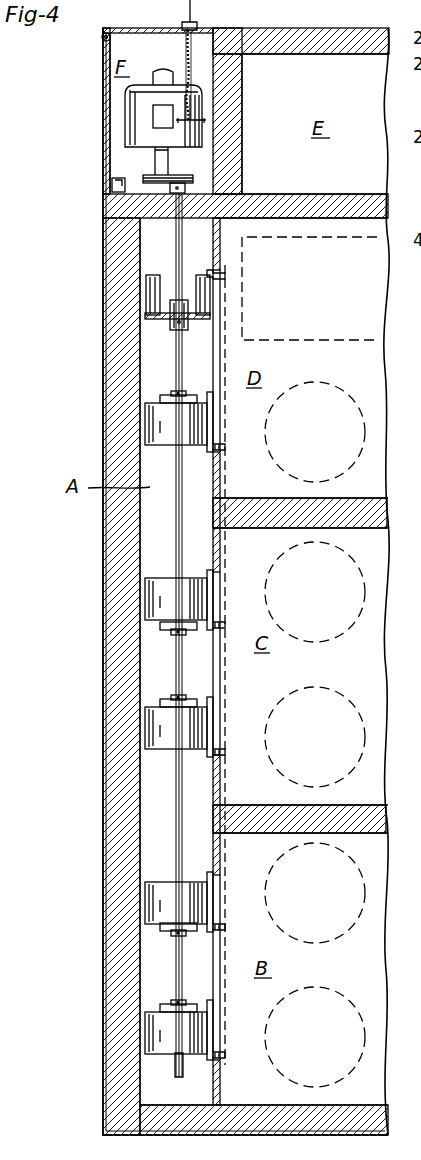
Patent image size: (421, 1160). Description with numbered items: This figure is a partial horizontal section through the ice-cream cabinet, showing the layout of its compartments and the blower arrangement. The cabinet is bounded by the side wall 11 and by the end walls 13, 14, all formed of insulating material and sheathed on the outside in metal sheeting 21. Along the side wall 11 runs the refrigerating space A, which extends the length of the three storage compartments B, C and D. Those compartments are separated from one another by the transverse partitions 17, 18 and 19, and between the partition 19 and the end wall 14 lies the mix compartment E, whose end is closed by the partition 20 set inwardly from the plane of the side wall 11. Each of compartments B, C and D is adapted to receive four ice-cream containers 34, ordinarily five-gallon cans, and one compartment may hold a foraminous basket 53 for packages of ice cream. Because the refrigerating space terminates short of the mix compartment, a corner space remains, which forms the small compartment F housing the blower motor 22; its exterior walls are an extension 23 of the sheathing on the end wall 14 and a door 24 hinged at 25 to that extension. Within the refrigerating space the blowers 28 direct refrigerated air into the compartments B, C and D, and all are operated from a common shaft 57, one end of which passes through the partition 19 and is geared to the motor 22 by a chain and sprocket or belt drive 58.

The side wall 11 is at (122, 566).
The end wall 13 is at (270, 1088).
The end wall 14 is at (336, 44).
The transverse partition 17 is at (270, 805).
The transverse partition 18 is at (262, 478).
The transverse partition 19 is at (280, 194).
The partition 20 is at (242, 80).
The metal sheeting 21 is at (103, 995).
The blower motor 22 is at (148, 88).
The extension of the sheathing sheet 23 is at (183, 26).
The door 24 is at (103, 140).
The hinge 25 is at (103, 38).
The blowers 28 is at (165, 403).
The ice-cream containers 34 is at (332, 386).
The foraminous basket 53 is at (306, 342).
The common shaft 57 is at (177, 534).
The chain and sprocket or belt drive 58 is at (178, 178).